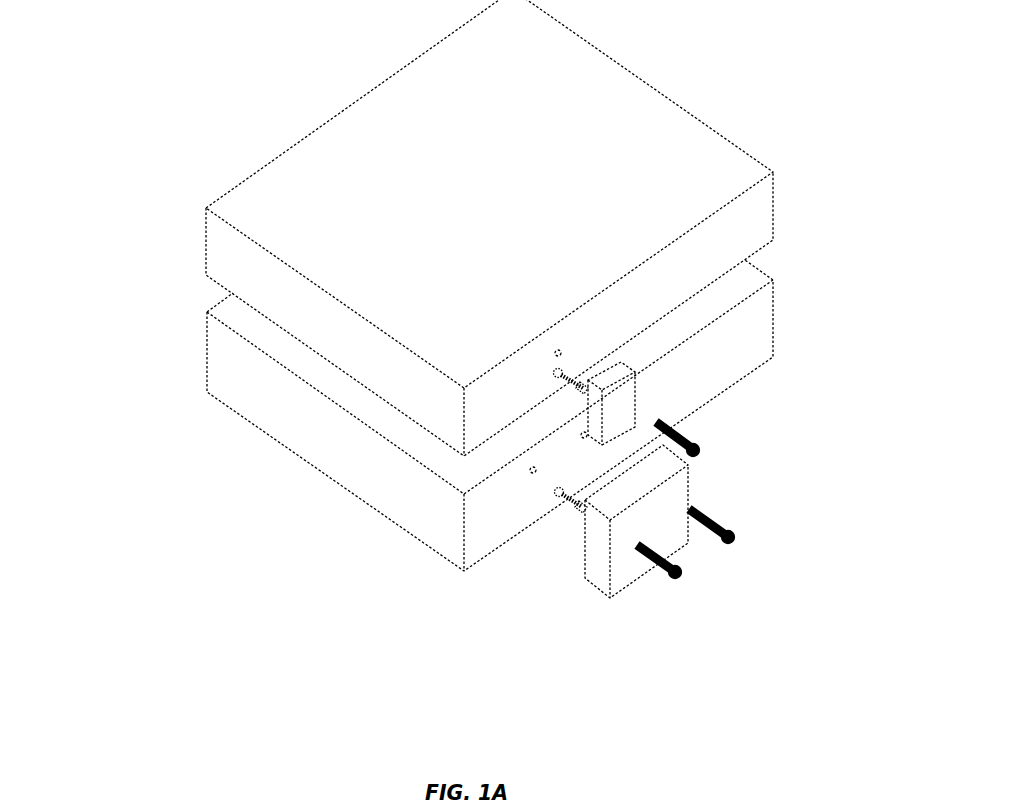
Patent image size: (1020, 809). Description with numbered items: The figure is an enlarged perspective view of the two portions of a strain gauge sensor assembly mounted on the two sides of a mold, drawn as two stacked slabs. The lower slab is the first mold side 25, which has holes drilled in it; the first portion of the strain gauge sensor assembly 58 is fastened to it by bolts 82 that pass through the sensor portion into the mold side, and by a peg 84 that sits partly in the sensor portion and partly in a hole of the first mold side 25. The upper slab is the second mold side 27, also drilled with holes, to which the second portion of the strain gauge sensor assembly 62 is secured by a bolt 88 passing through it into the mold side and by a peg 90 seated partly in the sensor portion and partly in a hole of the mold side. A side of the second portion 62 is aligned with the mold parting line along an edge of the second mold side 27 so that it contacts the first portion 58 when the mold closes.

The second mold side 27 is at (508, 398).
The first mold side 25 is at (500, 508).
The second portion of the strain gauge sensor assembly 62 is at (622, 402).
The peg 90 is at (577, 383).
The bolt 88 is at (683, 430).
The first portion of the strain gauge sensor assembly 58 is at (668, 507).
The bolts 82 is at (722, 522).
The peg 84 is at (570, 500).